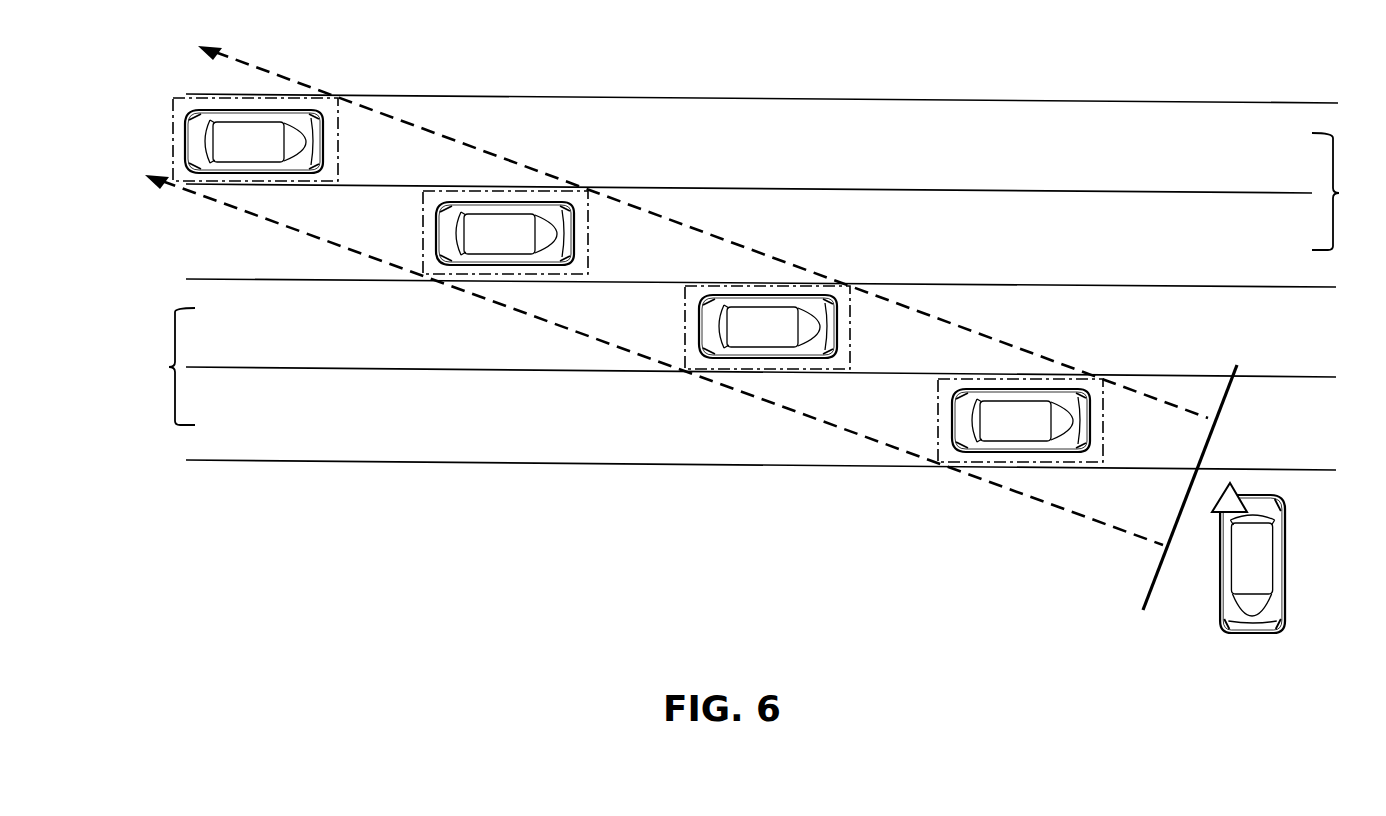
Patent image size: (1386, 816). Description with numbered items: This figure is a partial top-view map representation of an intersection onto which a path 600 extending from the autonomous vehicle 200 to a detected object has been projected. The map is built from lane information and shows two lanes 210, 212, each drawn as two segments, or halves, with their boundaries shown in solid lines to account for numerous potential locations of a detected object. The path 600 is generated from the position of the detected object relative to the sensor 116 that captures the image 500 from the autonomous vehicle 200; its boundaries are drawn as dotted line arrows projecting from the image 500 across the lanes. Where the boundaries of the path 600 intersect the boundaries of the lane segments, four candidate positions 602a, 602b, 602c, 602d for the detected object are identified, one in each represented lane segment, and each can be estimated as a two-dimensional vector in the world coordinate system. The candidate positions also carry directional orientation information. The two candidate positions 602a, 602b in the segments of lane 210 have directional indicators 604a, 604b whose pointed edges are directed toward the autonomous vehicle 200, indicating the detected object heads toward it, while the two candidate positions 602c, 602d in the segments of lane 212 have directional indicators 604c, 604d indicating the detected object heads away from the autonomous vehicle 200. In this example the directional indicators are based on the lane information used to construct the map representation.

The path 600 is at (190, 34).
The candidate position 602d is at (260, 98).
The directional indicator 604d is at (277, 172).
The candidate position 602c is at (511, 192).
The directional indicator 604c is at (524, 265).
The candidate position 602b is at (762, 287).
The directional indicator 604b is at (775, 360).
The candidate position 602a is at (1015, 380).
The directional indicator 604a is at (1030, 455).
The lane 210 is at (161, 366).
The lane 212 is at (1345, 191).
The image 500 is at (1153, 576).
The autonomous vehicle 200 is at (1250, 628).
The sensor 116 is at (1232, 488).